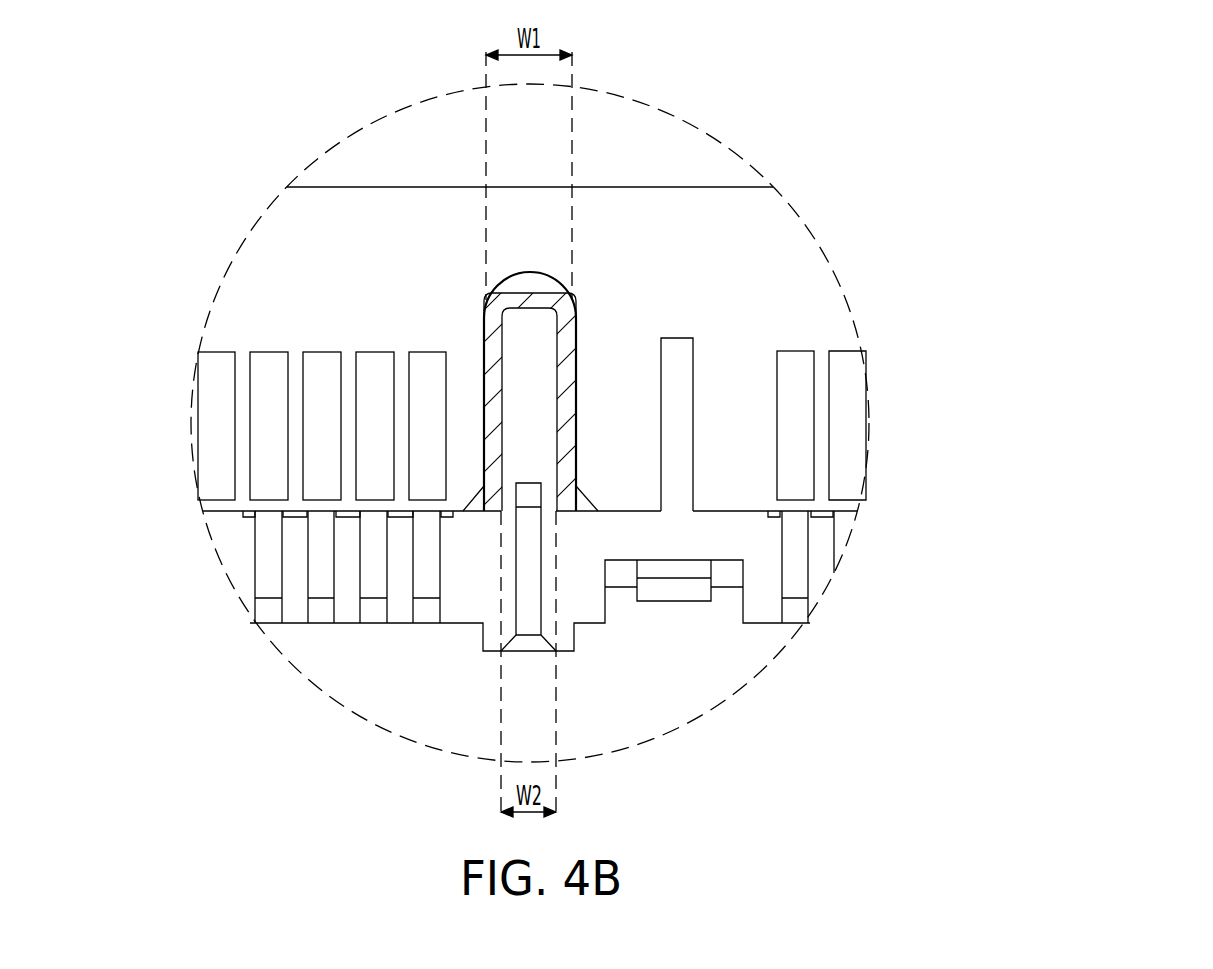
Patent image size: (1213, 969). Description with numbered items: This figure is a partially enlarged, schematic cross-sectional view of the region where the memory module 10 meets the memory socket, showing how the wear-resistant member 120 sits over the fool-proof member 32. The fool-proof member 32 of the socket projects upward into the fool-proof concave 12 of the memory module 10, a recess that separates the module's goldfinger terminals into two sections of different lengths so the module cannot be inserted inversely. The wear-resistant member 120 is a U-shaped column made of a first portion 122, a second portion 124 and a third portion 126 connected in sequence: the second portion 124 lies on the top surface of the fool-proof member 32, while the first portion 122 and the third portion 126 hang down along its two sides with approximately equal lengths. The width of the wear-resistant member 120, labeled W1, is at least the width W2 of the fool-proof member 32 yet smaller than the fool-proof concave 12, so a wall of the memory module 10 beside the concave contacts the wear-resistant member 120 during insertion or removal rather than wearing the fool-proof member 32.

The memory module 10 is at (773, 282).
The fool-proof concave 12 is at (533, 272).
The fool-proof member 32 is at (533, 425).
The wear-resistant member 120 is at (1120, 450).
The first portion 122 is at (490, 410).
The second portion 124 is at (535, 300).
The third portion 126 is at (565, 387).